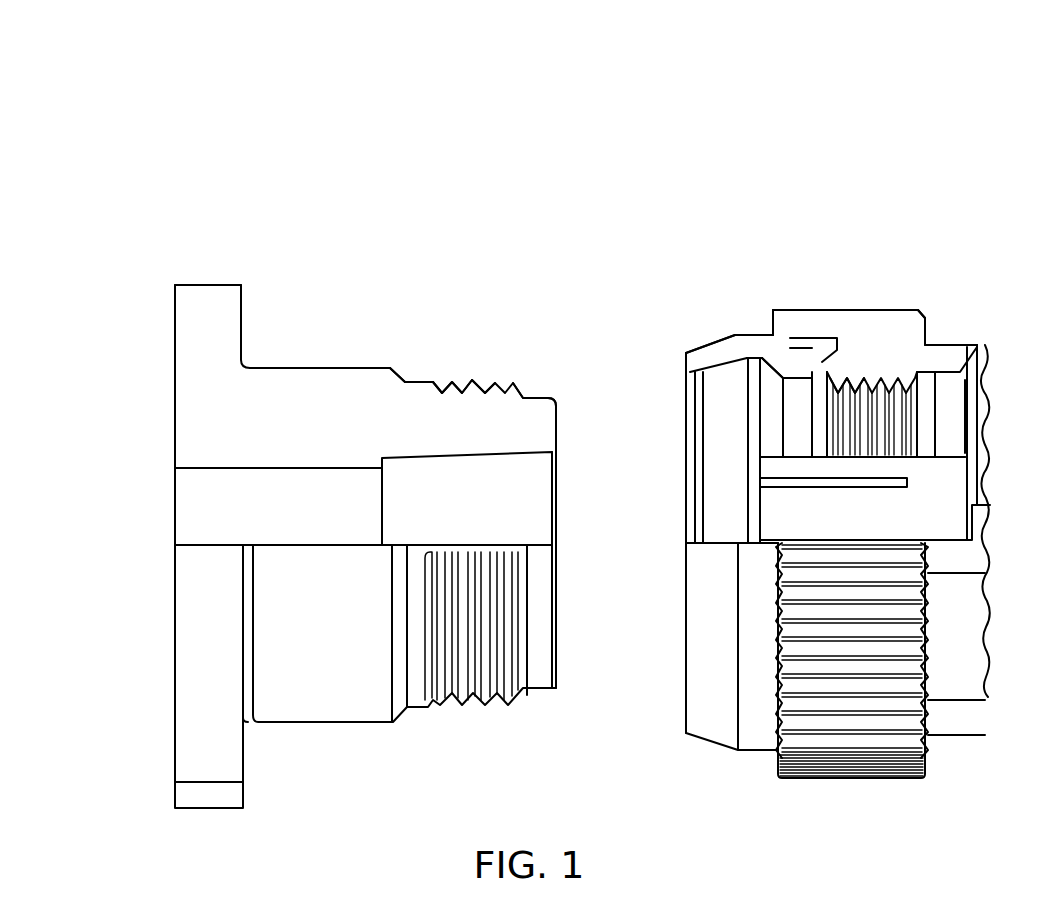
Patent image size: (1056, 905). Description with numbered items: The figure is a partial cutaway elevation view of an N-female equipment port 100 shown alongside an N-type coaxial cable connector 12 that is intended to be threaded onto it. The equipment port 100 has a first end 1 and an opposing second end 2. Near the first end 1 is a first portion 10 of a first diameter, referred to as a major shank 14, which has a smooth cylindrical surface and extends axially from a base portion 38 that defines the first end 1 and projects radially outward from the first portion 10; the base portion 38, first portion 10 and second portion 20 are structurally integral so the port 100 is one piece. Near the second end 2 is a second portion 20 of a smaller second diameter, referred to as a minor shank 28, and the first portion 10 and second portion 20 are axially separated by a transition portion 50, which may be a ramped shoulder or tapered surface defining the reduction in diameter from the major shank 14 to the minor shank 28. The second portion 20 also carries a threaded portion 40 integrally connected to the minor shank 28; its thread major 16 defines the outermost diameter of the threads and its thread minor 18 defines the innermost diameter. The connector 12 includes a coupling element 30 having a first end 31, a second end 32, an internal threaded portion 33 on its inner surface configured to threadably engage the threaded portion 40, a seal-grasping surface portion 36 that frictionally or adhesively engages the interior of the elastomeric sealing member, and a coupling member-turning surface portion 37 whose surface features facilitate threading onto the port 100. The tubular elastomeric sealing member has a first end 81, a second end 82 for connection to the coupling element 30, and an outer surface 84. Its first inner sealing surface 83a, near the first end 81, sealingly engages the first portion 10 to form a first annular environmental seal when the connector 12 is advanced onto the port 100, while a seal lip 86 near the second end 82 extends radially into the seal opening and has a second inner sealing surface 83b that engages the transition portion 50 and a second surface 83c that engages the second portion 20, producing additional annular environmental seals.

The first end 1 is at (203, 135).
The equipment port 100 is at (117, 203).
The second end 2 is at (572, 307).
The first portion 10 is at (338, 252).
The coaxial cable connector 12 is at (790, 223).
The major shank 14 is at (331, 367).
The thread major 16 is at (472, 387).
The thread minor 18 is at (485, 393).
The second portion 20 is at (508, 293).
The minor shank 28 is at (418, 383).
The coupling element 30 is at (883, 345).
The first end 31 is at (765, 313).
The second end 32 is at (967, 312).
The internal threaded portion 33 is at (892, 402).
The seal-grasping surface portion 36 is at (802, 372).
The coupling member-turning surface portion 37 is at (875, 755).
The base portion 38 is at (215, 297).
The threaded portion 40 is at (523, 388).
The transition portion 50 is at (398, 375).
The first end 81 is at (685, 328).
The second end 82 is at (793, 327).
The first inner sealing surface 83a is at (702, 372).
The second inner sealing surface 83b is at (780, 368).
The second surface 83c is at (810, 380).
The outer surface 84 is at (710, 343).
The seal lip 86 is at (782, 370).